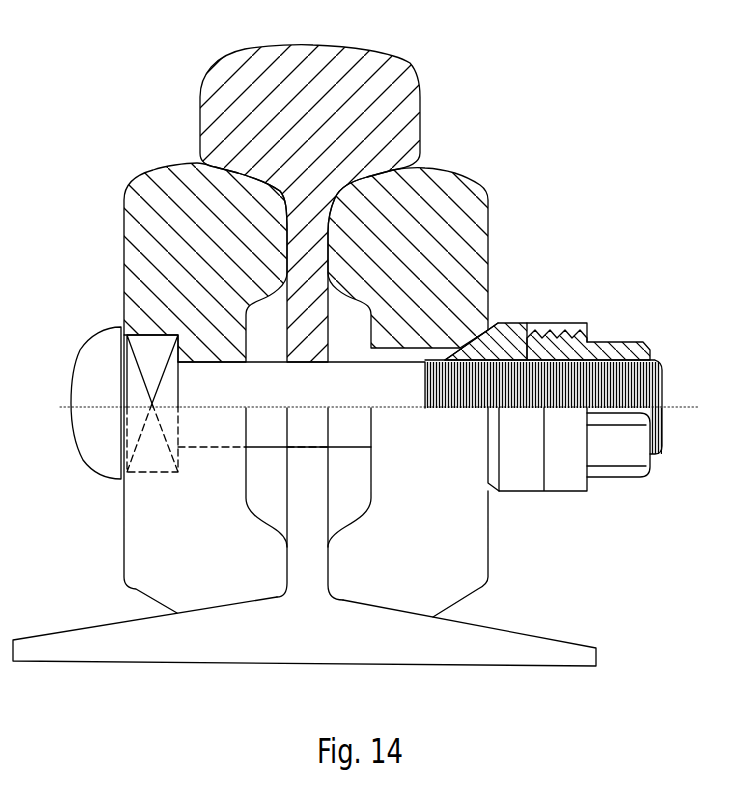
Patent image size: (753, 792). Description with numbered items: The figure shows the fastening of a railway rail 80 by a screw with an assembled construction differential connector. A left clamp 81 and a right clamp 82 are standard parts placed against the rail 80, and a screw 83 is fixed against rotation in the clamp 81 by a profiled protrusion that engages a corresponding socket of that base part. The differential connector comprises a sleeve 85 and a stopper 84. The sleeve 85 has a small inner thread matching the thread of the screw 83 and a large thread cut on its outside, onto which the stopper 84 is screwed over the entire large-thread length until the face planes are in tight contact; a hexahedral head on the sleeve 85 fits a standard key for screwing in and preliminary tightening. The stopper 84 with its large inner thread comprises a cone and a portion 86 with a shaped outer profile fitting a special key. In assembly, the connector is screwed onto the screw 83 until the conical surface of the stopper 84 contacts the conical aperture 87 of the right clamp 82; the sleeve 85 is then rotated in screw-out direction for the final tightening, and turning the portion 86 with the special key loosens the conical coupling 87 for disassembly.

The rail 80 is at (268, 149).
The left clamp 81 is at (195, 242).
The right clamp 82 is at (402, 227).
The screw 83 is at (275, 391).
The stopper 84 is at (490, 343).
The sleeve 85 is at (573, 350).
The portion with shaped profile 86 is at (569, 440).
The conical aperture 87 is at (477, 354).